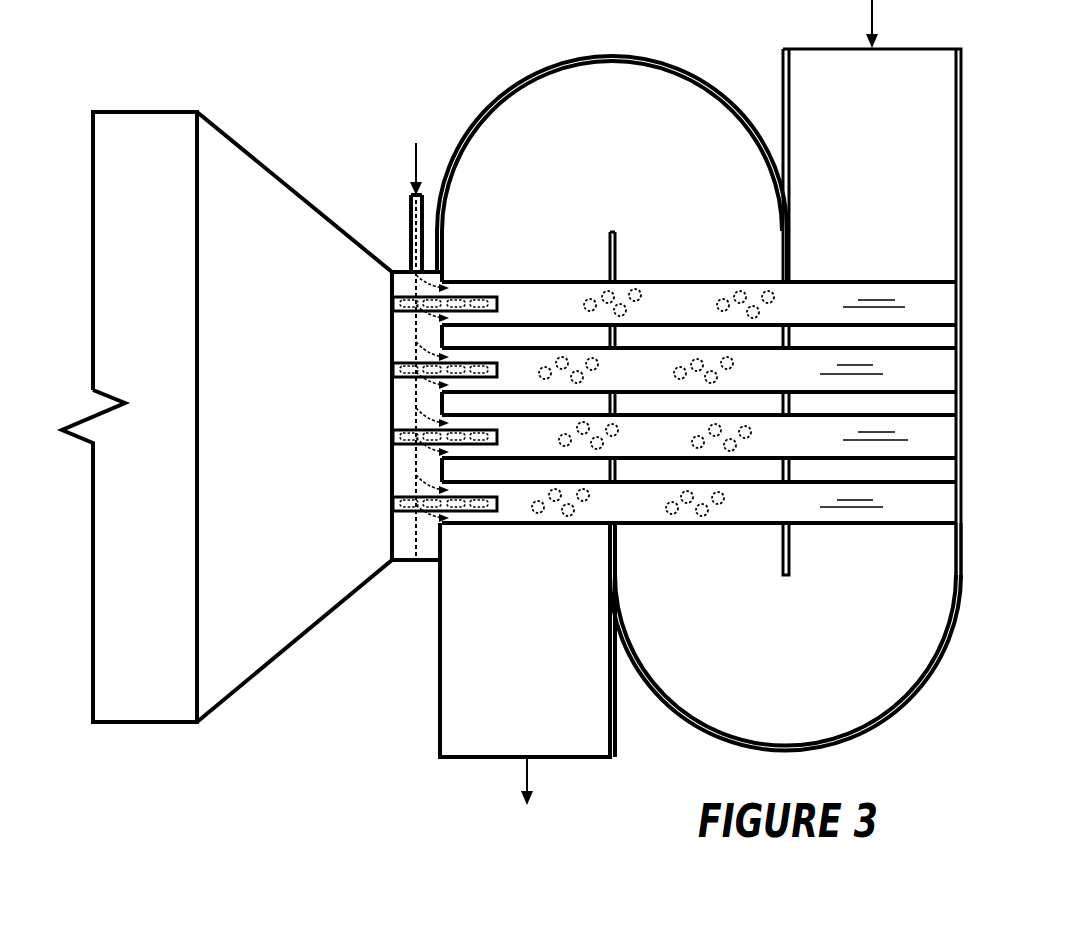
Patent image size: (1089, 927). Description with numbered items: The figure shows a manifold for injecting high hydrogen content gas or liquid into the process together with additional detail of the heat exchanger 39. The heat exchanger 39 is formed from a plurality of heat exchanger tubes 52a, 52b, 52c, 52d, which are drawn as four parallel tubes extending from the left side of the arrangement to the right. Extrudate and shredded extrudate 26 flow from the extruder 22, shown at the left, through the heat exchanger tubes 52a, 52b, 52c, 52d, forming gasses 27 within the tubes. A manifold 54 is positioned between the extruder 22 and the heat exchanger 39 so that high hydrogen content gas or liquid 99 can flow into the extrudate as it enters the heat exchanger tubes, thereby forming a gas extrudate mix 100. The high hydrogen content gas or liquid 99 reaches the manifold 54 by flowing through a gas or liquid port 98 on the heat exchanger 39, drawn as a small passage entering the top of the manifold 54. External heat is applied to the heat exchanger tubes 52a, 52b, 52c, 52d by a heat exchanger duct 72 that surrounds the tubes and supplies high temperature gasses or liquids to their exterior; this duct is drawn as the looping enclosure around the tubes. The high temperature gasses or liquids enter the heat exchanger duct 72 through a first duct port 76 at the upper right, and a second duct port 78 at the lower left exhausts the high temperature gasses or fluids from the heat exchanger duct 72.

The extruder 22 is at (146, 112).
The heat exchanger 39 is at (452, 48).
The gas or liquid port 98 is at (410, 200).
The high hydrogen content gas or liquid 99 is at (410, 238).
The shredded extrudate 26 is at (475, 300).
The gas extrudate mix 100 is at (627, 284).
The gasses 27 is at (878, 300).
The heat exchanger tube 52a is at (728, 283).
The heat exchanger tube 52b is at (958, 371).
The heat exchanger tube 52c is at (958, 439).
The heat exchanger tube 52d is at (958, 506).
The manifold 54 is at (417, 563).
The first duct port 76 is at (870, 20).
The second duct port 78 is at (529, 768).
The heat exchanger duct 72 is at (865, 731).